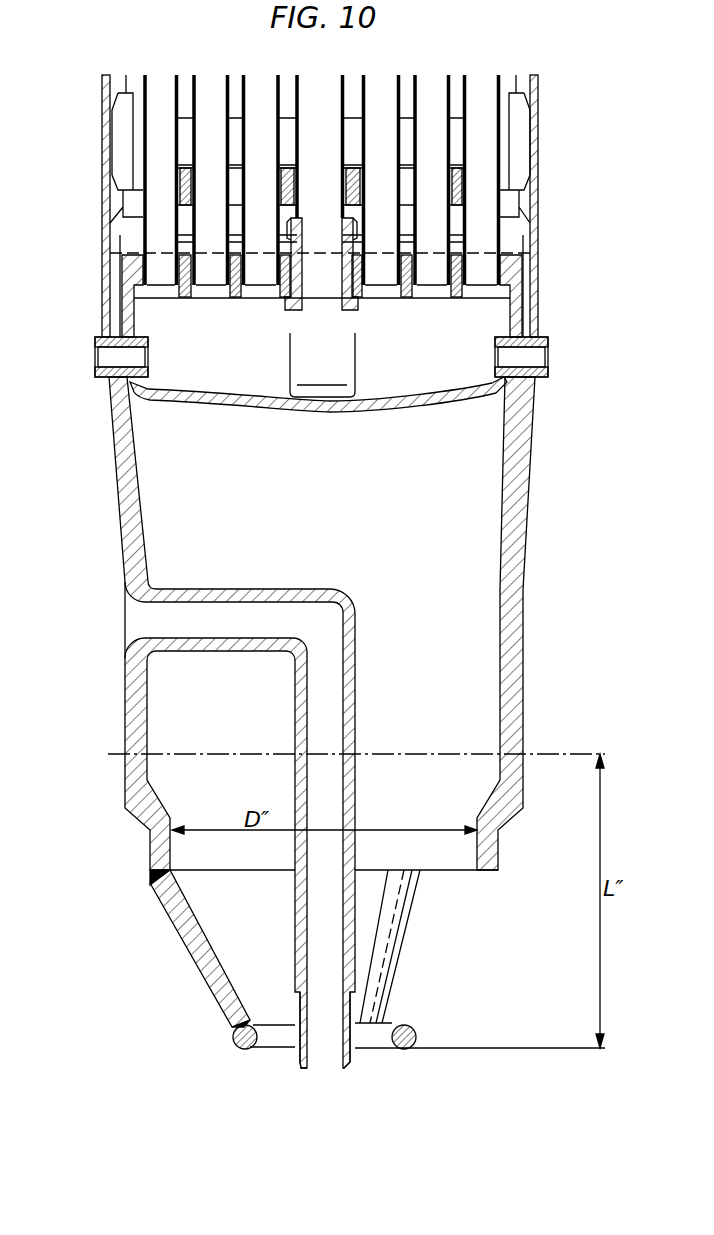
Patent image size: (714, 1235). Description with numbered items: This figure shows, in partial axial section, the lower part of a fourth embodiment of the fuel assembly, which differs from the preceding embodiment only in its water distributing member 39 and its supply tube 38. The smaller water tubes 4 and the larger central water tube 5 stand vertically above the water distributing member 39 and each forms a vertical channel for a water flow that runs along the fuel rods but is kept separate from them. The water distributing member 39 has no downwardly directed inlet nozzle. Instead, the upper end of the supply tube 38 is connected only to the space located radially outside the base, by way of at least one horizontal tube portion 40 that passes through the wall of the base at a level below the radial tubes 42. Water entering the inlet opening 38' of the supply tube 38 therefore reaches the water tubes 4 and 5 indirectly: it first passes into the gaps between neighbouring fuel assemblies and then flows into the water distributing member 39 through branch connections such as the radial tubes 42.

The water tube 4 is at (205, 226).
The central water tube 5 is at (322, 216).
The supply tube 38 is at (311, 853).
The inlet opening 38' is at (336, 1050).
The water distributing member 39 is at (405, 367).
The horizontal tube portion 40 is at (252, 589).
The radial tubes 42 is at (110, 360).